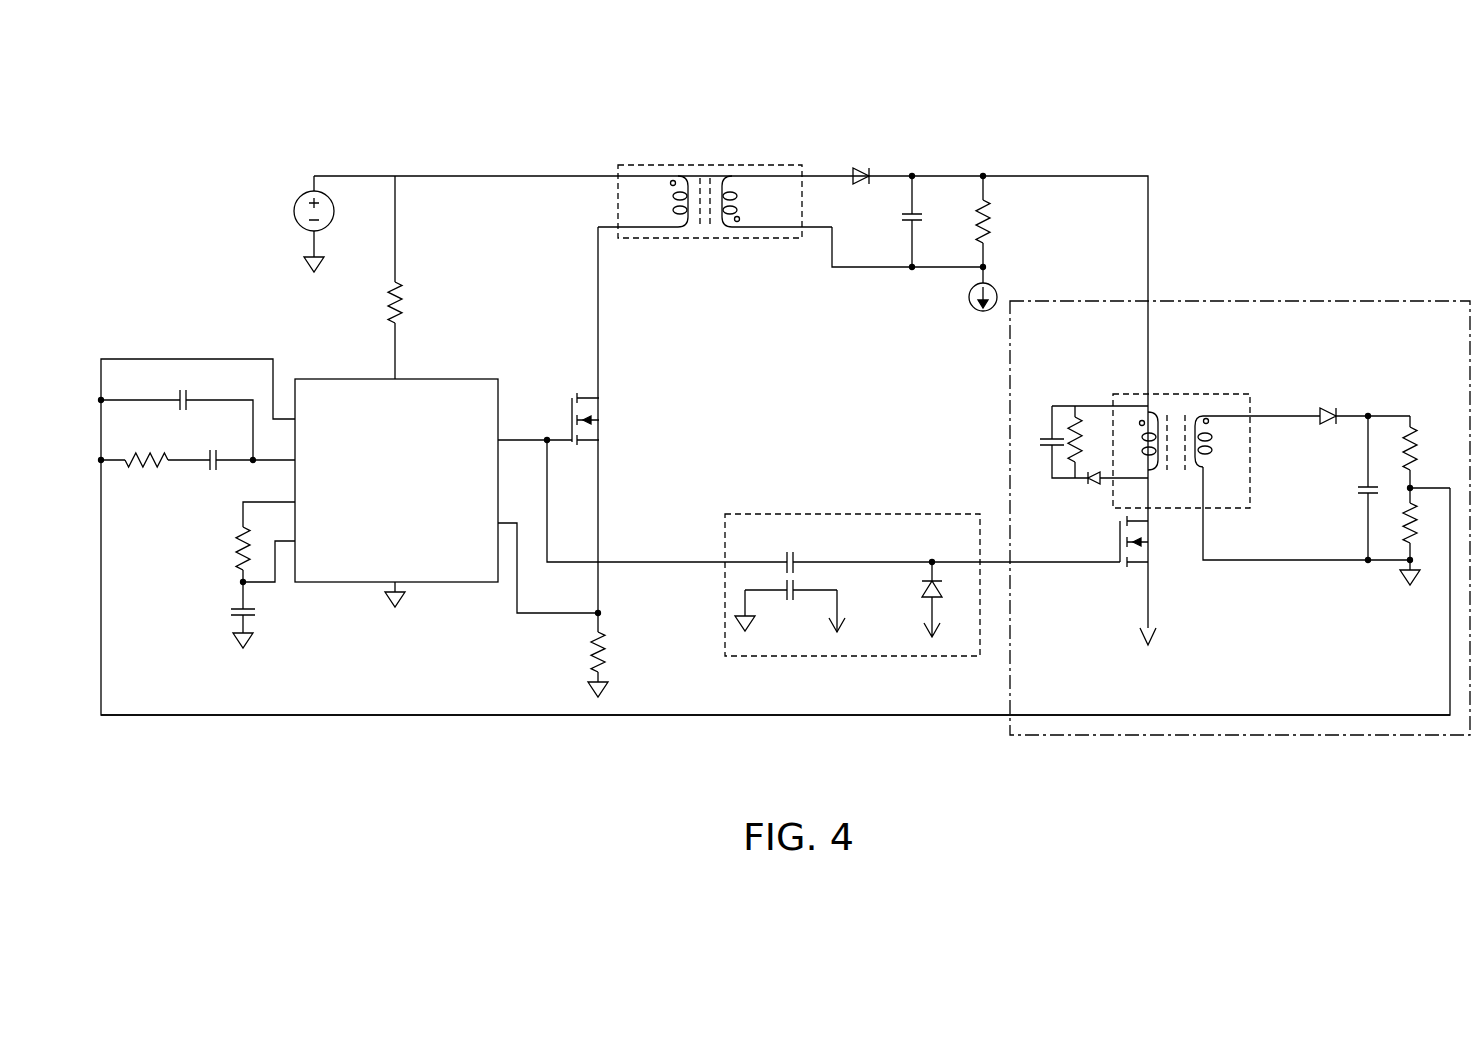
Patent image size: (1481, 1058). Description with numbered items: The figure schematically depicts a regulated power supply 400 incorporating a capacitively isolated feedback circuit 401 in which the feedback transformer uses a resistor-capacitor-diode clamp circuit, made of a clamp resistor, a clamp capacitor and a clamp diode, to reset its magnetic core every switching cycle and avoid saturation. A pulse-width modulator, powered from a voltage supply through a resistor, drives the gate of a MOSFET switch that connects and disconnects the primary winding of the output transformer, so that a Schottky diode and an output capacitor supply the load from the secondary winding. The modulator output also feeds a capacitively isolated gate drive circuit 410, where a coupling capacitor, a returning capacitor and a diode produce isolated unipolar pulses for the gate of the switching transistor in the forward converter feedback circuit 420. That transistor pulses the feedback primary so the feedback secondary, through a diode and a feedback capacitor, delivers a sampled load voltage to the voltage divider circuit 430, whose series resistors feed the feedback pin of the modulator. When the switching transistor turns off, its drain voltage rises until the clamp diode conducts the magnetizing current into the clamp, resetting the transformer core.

The regulated power supply 400 is at (785, 451).
The capacitively isolated feedback circuit 401 is at (775, 803).
The capacitively isolated gate drive circuit 410 is at (832, 539).
The forward converter feedback circuit 420 is at (1240, 563).
The voltage divider circuit 430 is at (1410, 448).